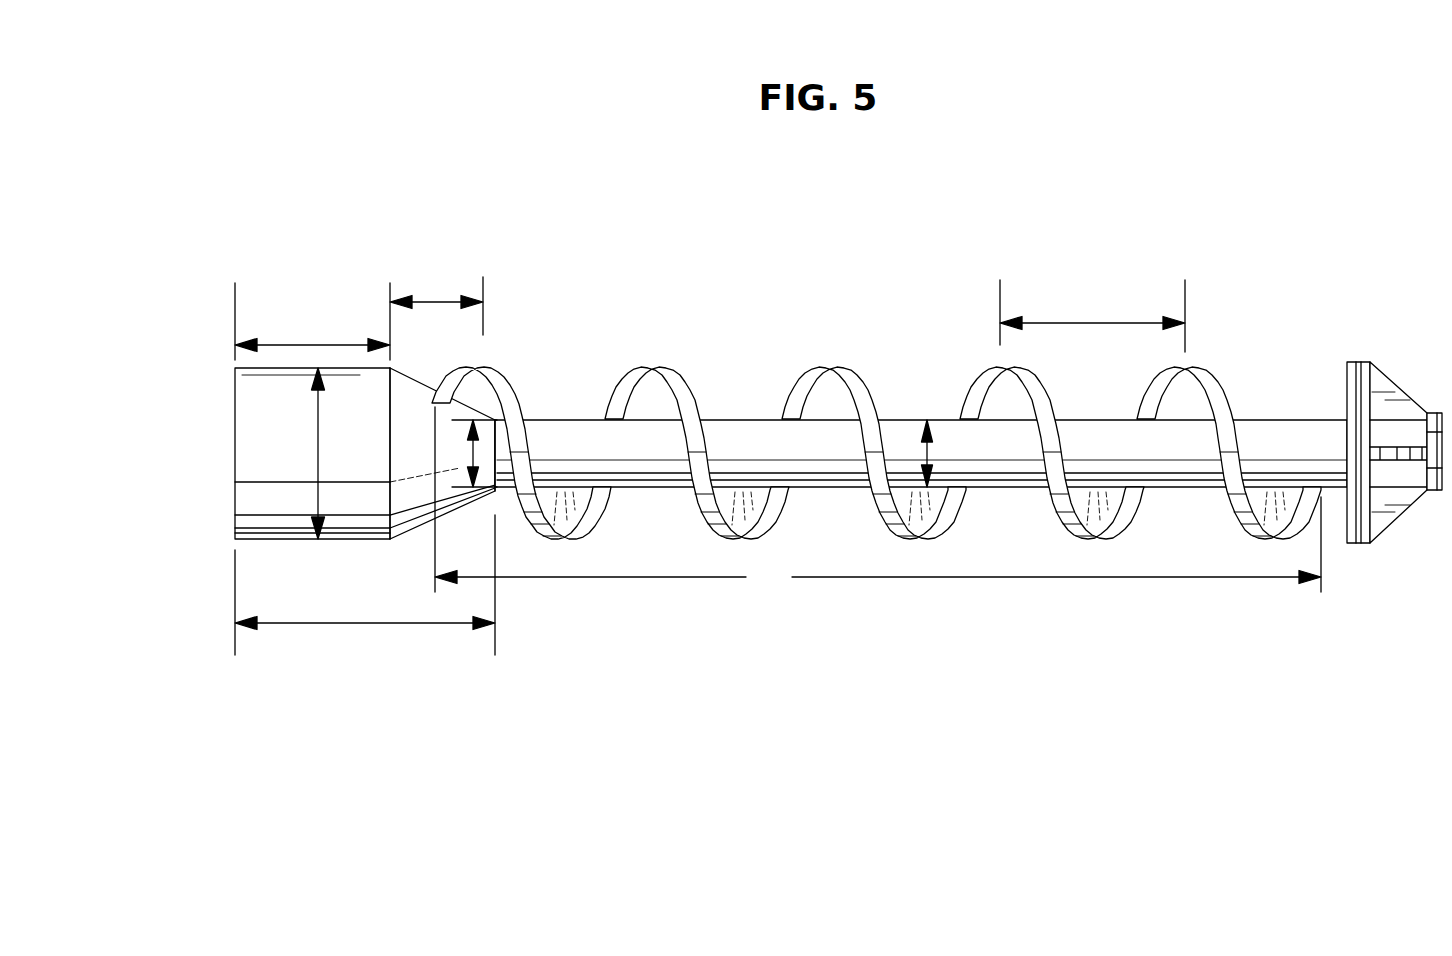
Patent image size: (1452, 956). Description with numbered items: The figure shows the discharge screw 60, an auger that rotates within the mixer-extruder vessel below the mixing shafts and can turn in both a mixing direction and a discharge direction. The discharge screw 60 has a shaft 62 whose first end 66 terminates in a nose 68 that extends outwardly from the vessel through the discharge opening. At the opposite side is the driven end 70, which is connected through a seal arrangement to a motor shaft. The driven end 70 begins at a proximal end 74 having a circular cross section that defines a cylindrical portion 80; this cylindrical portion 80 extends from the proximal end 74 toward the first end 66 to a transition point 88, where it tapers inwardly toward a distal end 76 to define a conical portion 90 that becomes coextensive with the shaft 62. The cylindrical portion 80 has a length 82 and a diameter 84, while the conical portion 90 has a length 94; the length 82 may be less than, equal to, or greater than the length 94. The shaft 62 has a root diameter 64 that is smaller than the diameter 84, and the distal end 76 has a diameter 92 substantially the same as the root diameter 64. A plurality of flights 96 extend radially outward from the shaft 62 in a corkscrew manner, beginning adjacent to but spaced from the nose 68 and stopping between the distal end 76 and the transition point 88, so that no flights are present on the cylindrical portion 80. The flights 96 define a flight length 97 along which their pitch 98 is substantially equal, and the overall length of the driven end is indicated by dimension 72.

The discharge screw 60 is at (937, 474).
The shaft 62 is at (1188, 458).
The root diameter 64 is at (930, 444).
The first end 66 is at (1297, 438).
The nose 68 is at (1395, 388).
The driven end 70 is at (309, 421).
The feed section length 72 is at (350, 630).
The proximal end 74 is at (235, 404).
The distal end 76 is at (495, 418).
The cylindrical portion 80 is at (258, 502).
The length of the cylindrical portion 82 is at (297, 340).
The diameter of the cylindrical portion 84 is at (316, 432).
The transition point 88 is at (387, 447).
The conical portion 90 is at (398, 468).
The diameter of the distal end 92 is at (470, 452).
The length of the conical portion 94 is at (436, 305).
The flights 96 is at (753, 502).
The flight length 97 is at (878, 499).
The pitch 98 is at (1086, 317).